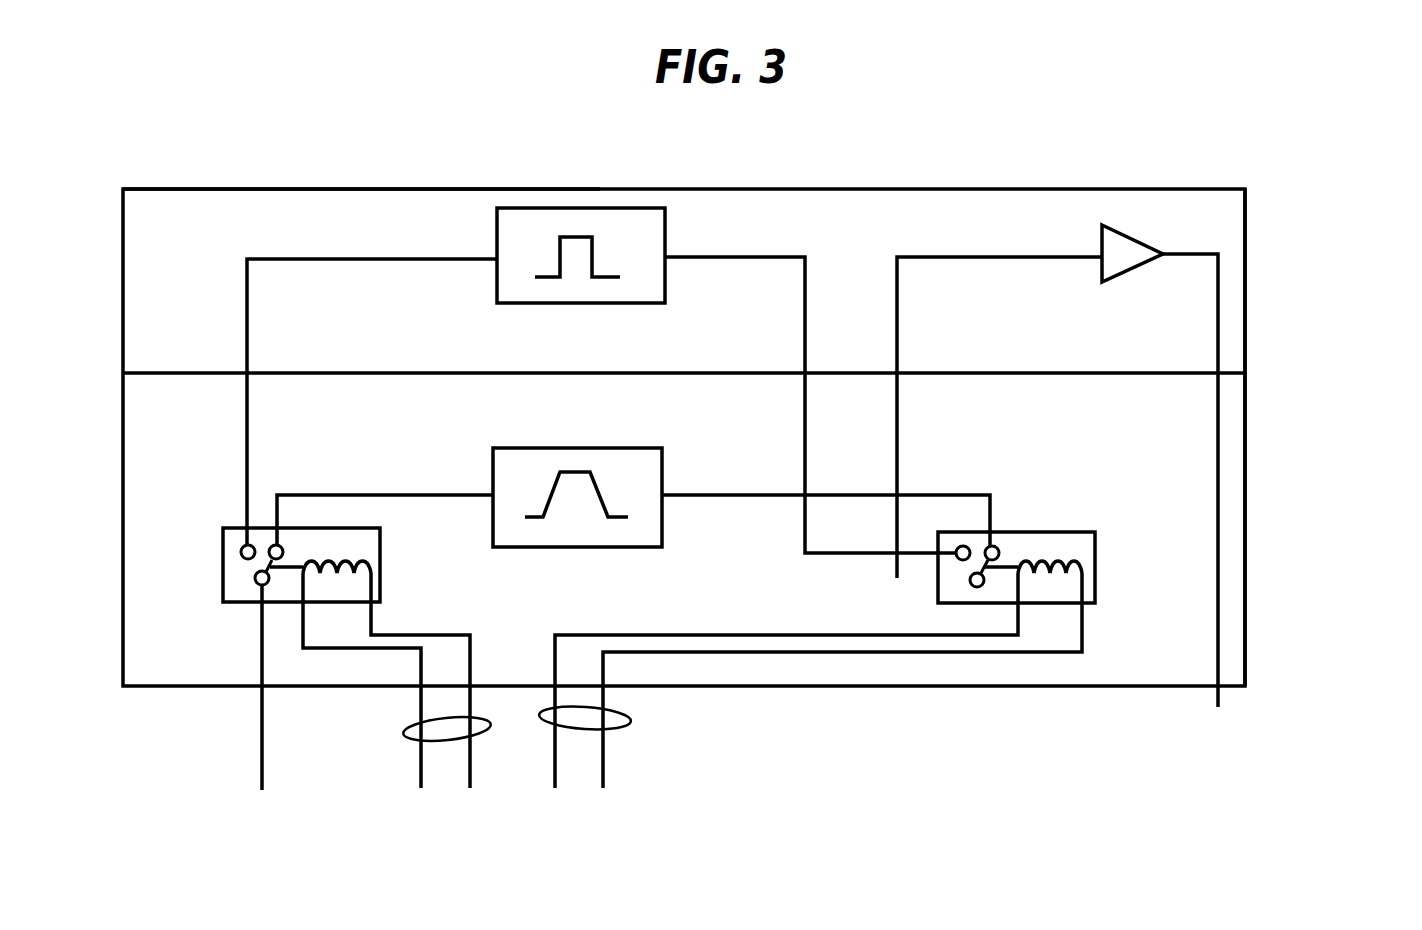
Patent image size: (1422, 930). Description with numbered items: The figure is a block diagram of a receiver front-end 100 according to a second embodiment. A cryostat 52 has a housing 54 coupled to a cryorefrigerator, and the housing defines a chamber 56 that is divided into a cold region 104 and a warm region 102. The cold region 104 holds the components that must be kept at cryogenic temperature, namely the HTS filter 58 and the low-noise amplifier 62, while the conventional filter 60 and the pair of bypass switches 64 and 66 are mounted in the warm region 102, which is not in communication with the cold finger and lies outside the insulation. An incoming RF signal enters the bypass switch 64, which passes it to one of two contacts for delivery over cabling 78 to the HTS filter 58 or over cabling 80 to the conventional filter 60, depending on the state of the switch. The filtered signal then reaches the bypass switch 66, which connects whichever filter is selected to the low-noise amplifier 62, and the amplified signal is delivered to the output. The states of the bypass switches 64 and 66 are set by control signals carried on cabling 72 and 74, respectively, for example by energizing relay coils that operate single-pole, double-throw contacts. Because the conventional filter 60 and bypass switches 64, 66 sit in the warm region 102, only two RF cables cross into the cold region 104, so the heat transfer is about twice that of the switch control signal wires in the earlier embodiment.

The cryostat 52 is at (1246, 205).
The housing 54 is at (1246, 592).
The chamber 56 is at (212, 261).
The HTS filter 58 is at (596, 208).
The conventional filter 60 is at (665, 462).
The low-noise amplifier 62 is at (1135, 238).
The bypass switch 64 is at (222, 553).
The bypass switch 66 is at (1097, 544).
The control signal cabling 72 is at (405, 735).
The control signal cabling 74 is at (630, 718).
The cabling 78 is at (371, 257).
The cabling 80 is at (300, 494).
The receiver front-end 100 is at (1310, 340).
The warm region 102 is at (185, 424).
The cold region 104 is at (185, 333).